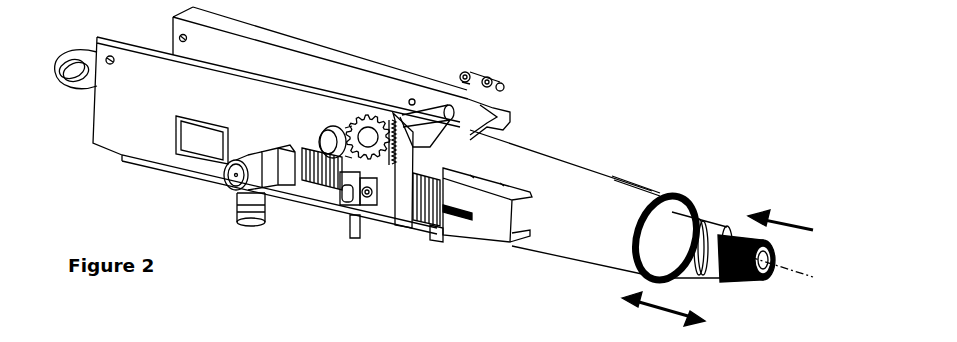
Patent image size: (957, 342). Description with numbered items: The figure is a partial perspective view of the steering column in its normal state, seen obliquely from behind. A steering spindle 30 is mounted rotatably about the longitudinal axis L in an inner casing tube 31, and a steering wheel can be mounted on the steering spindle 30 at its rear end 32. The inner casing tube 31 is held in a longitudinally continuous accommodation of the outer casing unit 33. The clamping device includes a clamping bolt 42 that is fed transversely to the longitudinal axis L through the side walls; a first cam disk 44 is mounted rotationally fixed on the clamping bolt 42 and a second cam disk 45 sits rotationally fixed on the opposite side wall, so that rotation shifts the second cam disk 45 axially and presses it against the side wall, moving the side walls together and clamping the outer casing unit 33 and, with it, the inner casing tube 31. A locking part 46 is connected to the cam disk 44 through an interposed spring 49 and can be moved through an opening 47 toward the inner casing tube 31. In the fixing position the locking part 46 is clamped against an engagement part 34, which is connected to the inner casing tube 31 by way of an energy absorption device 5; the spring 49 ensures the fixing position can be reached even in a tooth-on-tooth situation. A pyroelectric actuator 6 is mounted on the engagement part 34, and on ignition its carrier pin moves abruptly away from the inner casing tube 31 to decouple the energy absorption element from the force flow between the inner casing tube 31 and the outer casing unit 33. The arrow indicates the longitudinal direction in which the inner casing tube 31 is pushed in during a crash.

The energy absorption device 5 is at (478, 247).
The pyroelectric actuator 6 is at (230, 177).
The steering spindle 30 is at (690, 237).
The inner casing tube 31 is at (598, 215).
The rear end 32 is at (745, 237).
The outer casing unit 33 is at (150, 143).
The engagement part 34 is at (433, 200).
The clamping bolt 42 is at (433, 110).
The first cam disk 44 is at (364, 108).
The second cam disk 45 is at (390, 112).
The locking part 46 is at (373, 178).
The opening 47 is at (375, 192).
The spring 49 is at (363, 202).
The longitudinal axis L is at (798, 272).